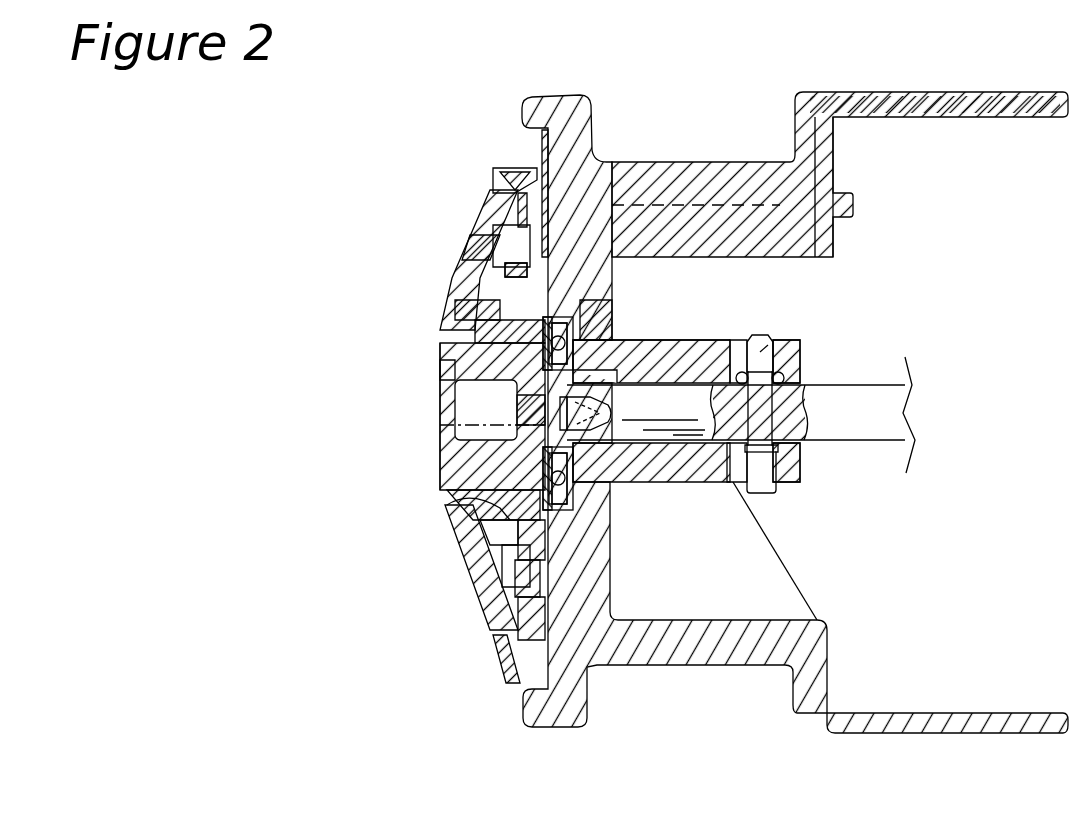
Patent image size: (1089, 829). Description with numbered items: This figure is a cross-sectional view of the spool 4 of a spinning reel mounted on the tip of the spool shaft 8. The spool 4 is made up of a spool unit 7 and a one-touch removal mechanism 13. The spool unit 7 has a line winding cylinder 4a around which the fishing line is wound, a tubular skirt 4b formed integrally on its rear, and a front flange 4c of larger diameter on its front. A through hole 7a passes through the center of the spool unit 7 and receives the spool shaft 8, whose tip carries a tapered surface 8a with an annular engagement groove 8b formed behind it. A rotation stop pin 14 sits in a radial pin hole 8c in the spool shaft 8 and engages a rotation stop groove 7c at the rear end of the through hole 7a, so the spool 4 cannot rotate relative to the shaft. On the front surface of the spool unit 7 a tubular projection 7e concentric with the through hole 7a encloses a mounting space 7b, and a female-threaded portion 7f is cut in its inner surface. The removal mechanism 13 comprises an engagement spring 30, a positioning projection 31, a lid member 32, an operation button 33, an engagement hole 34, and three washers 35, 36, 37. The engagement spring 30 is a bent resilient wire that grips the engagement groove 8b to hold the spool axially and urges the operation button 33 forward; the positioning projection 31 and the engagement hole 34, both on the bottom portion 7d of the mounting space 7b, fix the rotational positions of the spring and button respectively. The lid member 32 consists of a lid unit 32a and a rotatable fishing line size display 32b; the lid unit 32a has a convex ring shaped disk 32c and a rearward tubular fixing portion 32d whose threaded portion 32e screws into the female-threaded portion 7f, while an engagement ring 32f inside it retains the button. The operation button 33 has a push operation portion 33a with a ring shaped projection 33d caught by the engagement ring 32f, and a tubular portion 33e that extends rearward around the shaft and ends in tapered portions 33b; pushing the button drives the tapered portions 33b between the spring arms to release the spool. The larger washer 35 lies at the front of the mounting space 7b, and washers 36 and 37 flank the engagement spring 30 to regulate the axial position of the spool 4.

The spool 4 is at (728, 125).
The line winding cylinder 4a is at (655, 162).
The tubular skirt 4b is at (978, 95).
The front flange 4c is at (582, 112).
The spool unit 7 is at (705, 690).
The through hole 7a is at (650, 483).
The mounting space 7b is at (470, 530).
The rotation stop groove 7c is at (740, 355).
The bottom portion 7d is at (477, 332).
The tubular projection 7e is at (512, 600).
The female-threaded portion 7f is at (500, 530).
The spool shaft 8 is at (875, 385).
The tapered surface 8a is at (520, 440).
The annular engagement groove 8b is at (545, 430).
The pin hole 8c is at (778, 458).
The one-touch removal mechanism 13 is at (432, 363).
The rotation stop pin 14 is at (762, 358).
The engagement spring 30 is at (588, 322).
The positioning projection 31 is at (450, 425).
The lid member 32 is at (445, 280).
The lid unit 32a is at (462, 248).
The fishing line size display 32b is at (500, 176).
The ring shaped disk 32c is at (475, 228).
The tubular fixing portion 32d is at (453, 310).
The threaded portion 32e is at (590, 185).
The engagement ring 32f is at (460, 500).
The operation button 33 is at (440, 410).
The push operation portion 33a is at (442, 378).
The tapered portions 33b is at (600, 343).
The ring shaped projection 33d is at (470, 500).
The tubular portion 33e is at (501, 406).
The engagement hole 34 is at (600, 617).
The washer 35 is at (540, 687).
The washer 36 is at (557, 560).
The washer 37 is at (600, 445).